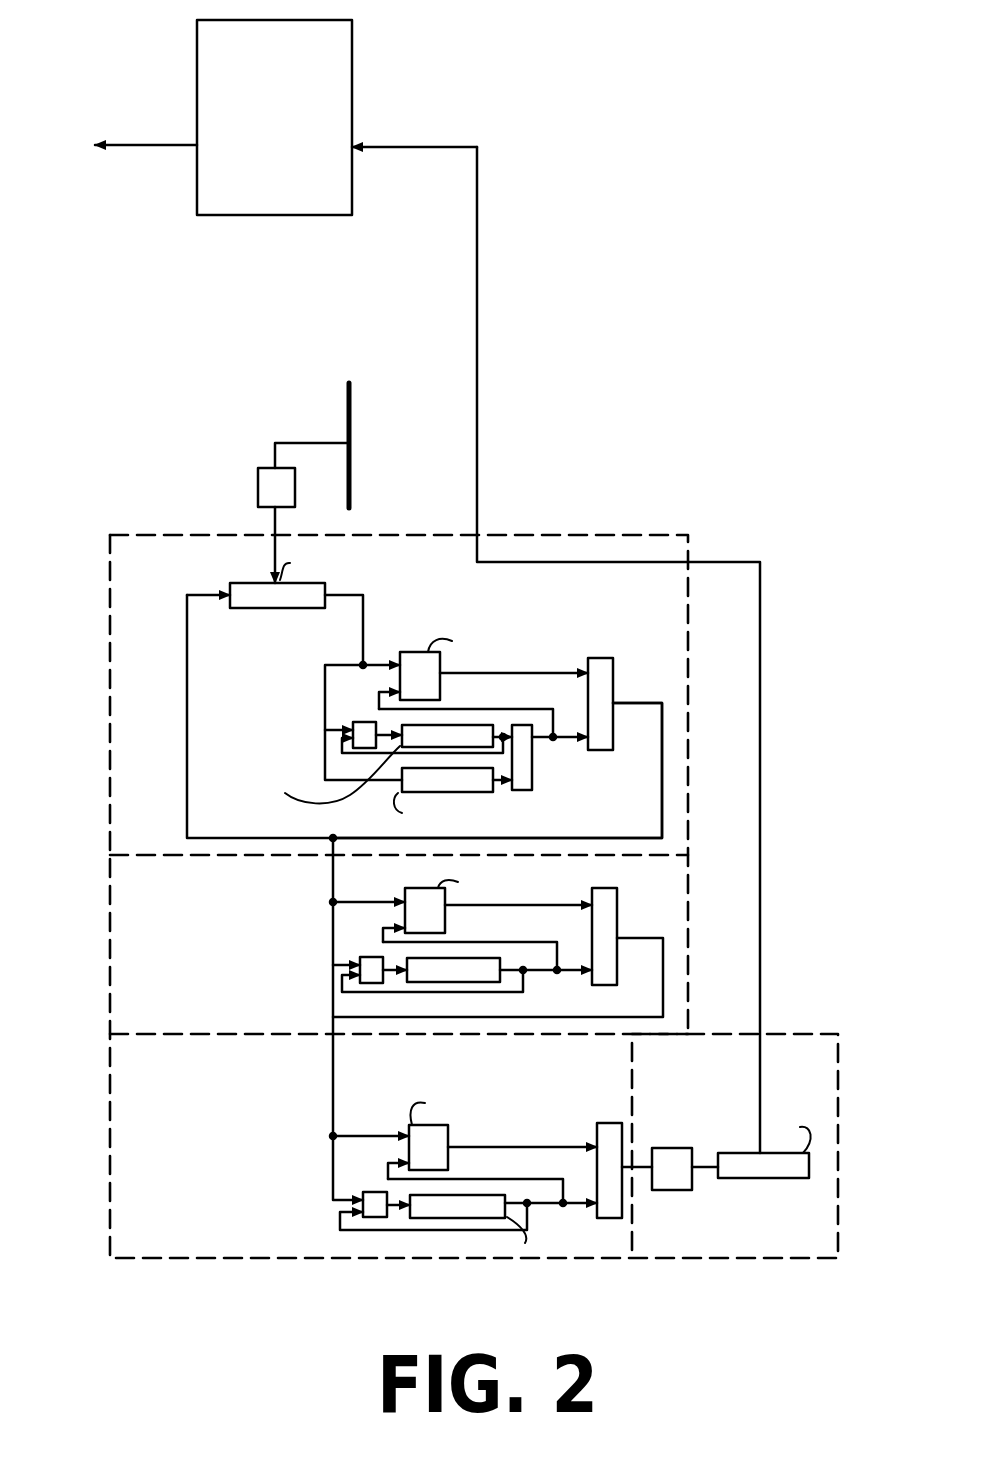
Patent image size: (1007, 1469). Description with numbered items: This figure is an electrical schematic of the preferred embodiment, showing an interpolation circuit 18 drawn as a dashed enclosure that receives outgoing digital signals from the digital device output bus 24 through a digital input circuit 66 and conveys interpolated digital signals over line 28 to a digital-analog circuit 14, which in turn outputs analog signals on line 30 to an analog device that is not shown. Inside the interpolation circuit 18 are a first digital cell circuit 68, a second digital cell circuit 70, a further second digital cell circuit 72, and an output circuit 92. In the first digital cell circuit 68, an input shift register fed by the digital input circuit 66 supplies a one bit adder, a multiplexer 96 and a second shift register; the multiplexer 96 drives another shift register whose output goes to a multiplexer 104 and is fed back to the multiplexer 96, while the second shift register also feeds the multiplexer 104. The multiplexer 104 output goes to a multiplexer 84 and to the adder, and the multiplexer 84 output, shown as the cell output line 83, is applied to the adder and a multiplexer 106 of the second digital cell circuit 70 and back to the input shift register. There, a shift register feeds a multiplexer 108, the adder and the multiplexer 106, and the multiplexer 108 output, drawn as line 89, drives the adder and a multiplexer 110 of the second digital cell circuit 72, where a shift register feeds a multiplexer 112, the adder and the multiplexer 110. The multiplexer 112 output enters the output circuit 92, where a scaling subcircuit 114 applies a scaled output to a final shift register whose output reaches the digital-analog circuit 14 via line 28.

The digital-analog circuit 14 is at (338, 78).
The line 30 is at (178, 146).
The line 28 is at (477, 199).
The digital device output bus 24 is at (348, 400).
The digital input circuit 66 is at (258, 481).
The interpolation circuit 18 is at (82, 674).
The first digital cell circuit 68 is at (432, 696).
The second digital cell circuit 70 is at (442, 1019).
The second digital cell circuit 72 is at (355, 1167).
The first stage output bus 83 is at (662, 800).
The second stage output bus 89 is at (665, 985).
The multiplexer 84 is at (597, 658).
The multiplexer 96 is at (364, 722).
The multiplexer 104 is at (532, 768).
The multiplexer 106 is at (373, 957).
The multiplexer 108 is at (618, 917).
The multiplexer 110 is at (375, 1192).
The multiplexer 112 is at (604, 1123).
The scaling subcircuit 114 is at (672, 1190).
The output circuit 92 is at (761, 1158).